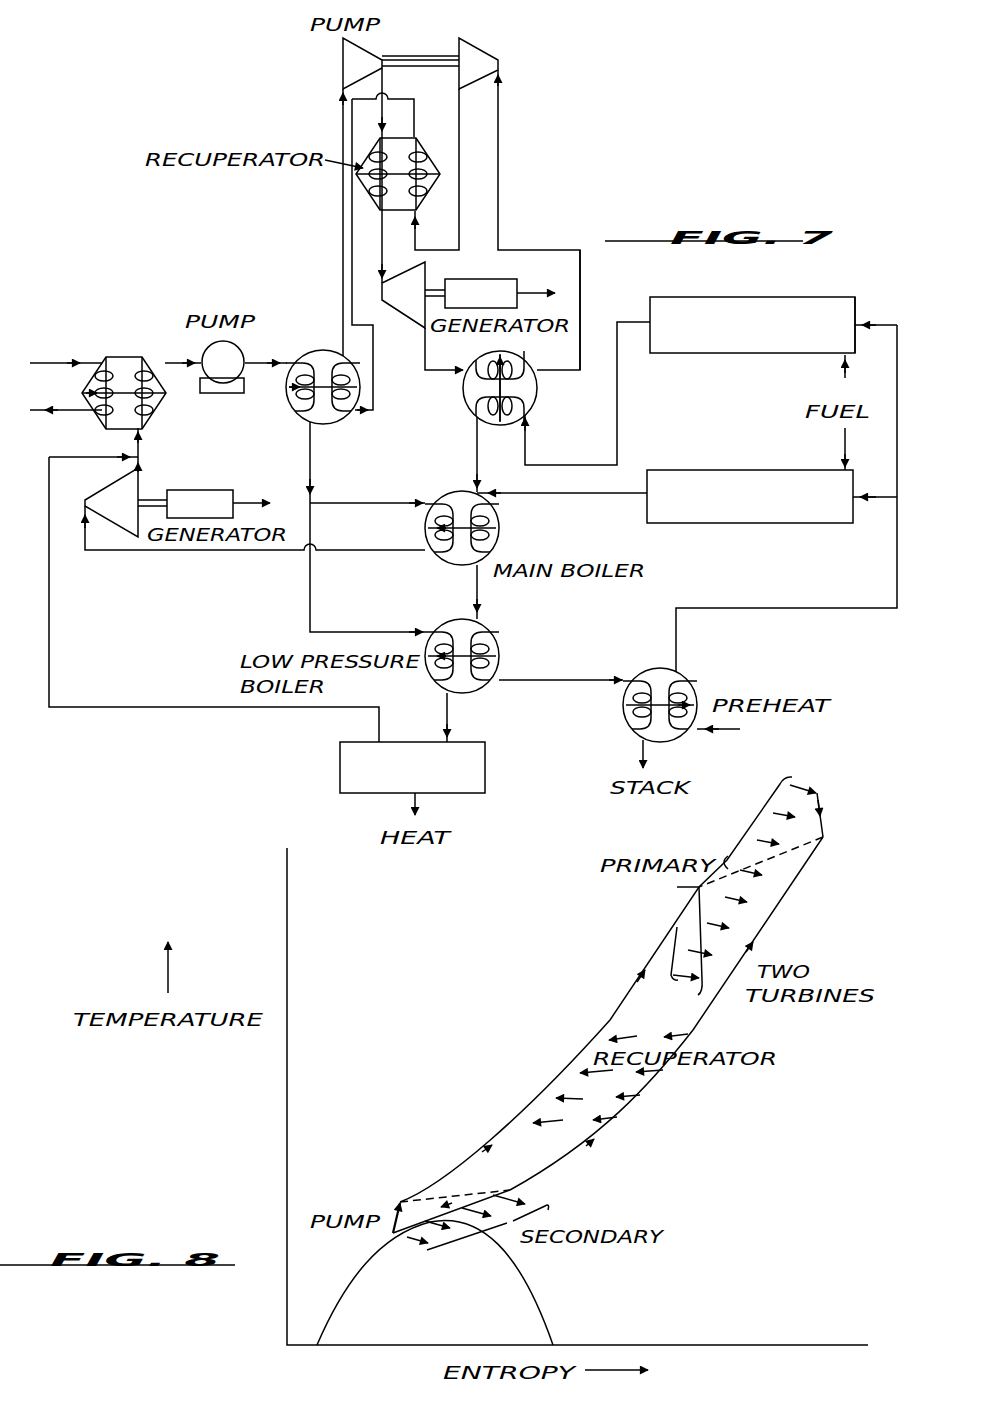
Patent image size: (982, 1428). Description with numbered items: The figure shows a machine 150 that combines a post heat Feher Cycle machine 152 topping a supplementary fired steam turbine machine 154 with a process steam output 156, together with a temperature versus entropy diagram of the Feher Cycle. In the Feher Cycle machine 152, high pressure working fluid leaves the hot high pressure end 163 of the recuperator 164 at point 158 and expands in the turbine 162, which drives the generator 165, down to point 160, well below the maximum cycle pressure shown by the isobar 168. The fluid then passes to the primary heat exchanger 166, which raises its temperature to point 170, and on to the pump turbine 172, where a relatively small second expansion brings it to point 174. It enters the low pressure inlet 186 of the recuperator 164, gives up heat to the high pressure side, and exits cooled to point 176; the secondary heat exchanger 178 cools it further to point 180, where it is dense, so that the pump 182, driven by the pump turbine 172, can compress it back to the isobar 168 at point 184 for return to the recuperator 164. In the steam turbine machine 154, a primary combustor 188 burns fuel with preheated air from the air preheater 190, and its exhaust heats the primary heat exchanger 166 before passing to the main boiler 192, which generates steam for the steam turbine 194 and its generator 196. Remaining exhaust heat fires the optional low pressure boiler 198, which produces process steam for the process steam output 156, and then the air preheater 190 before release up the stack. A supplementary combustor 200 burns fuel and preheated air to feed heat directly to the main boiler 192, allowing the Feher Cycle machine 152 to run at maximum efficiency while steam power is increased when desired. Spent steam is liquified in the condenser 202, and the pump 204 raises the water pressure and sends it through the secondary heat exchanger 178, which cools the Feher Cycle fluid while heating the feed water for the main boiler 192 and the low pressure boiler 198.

In FIG. 7, the machine 150 is at (609, 121).
In FIG. 7, the post heat Feher Cycle machine 152 is at (424, 49).
In FIG. 7, the supplementary fired steam turbine machine 154 is at (881, 278).
In FIG. 7, the process steam output 156 is at (340, 764).
In FIG. 8, the point 158 is at (674, 900).
In FIG. 8, the point 160 is at (681, 952).
In FIG. 7, the turbine 162 is at (410, 323).
In FIG. 7, the hot high pressure end 163 is at (378, 214).
In FIG. 7, the recuperator 164 is at (366, 198).
In FIG. 7, the generator 165 is at (514, 279).
In FIG. 7, the primary heat exchanger 166 is at (530, 404).
In FIG. 8, the isobar 168 is at (612, 1026).
In FIG. 8, the point 170 is at (820, 794).
In FIG. 7, the pump turbine 172 is at (498, 58).
In FIG. 8, the point 174 is at (824, 840).
In FIG. 8, the point 176 is at (521, 1193).
In FIG. 7, the secondary heat exchanger 178 is at (309, 397).
In FIG. 8, the point 180 is at (388, 1238).
In FIG. 7, the pump 182 is at (343, 62).
In FIG. 8, the point 184 is at (405, 1189).
In FIG. 7, the low pressure inlet 186 is at (416, 212).
In FIG. 7, the primary combustor 188 is at (690, 357).
In FIG. 7, the air preheater 190 is at (696, 690).
In FIG. 7, the main boiler 192 is at (447, 558).
In FIG. 7, the steam turbine 194 is at (140, 489).
In FIG. 7, the generator 196 is at (215, 491).
In FIG. 7, the low pressure boiler 198 is at (479, 688).
In FIG. 7, the supplementary combustor 200 is at (757, 524).
In FIG. 7, the condenser 202 is at (110, 356).
In FIG. 7, the pump 204 is at (201, 357).